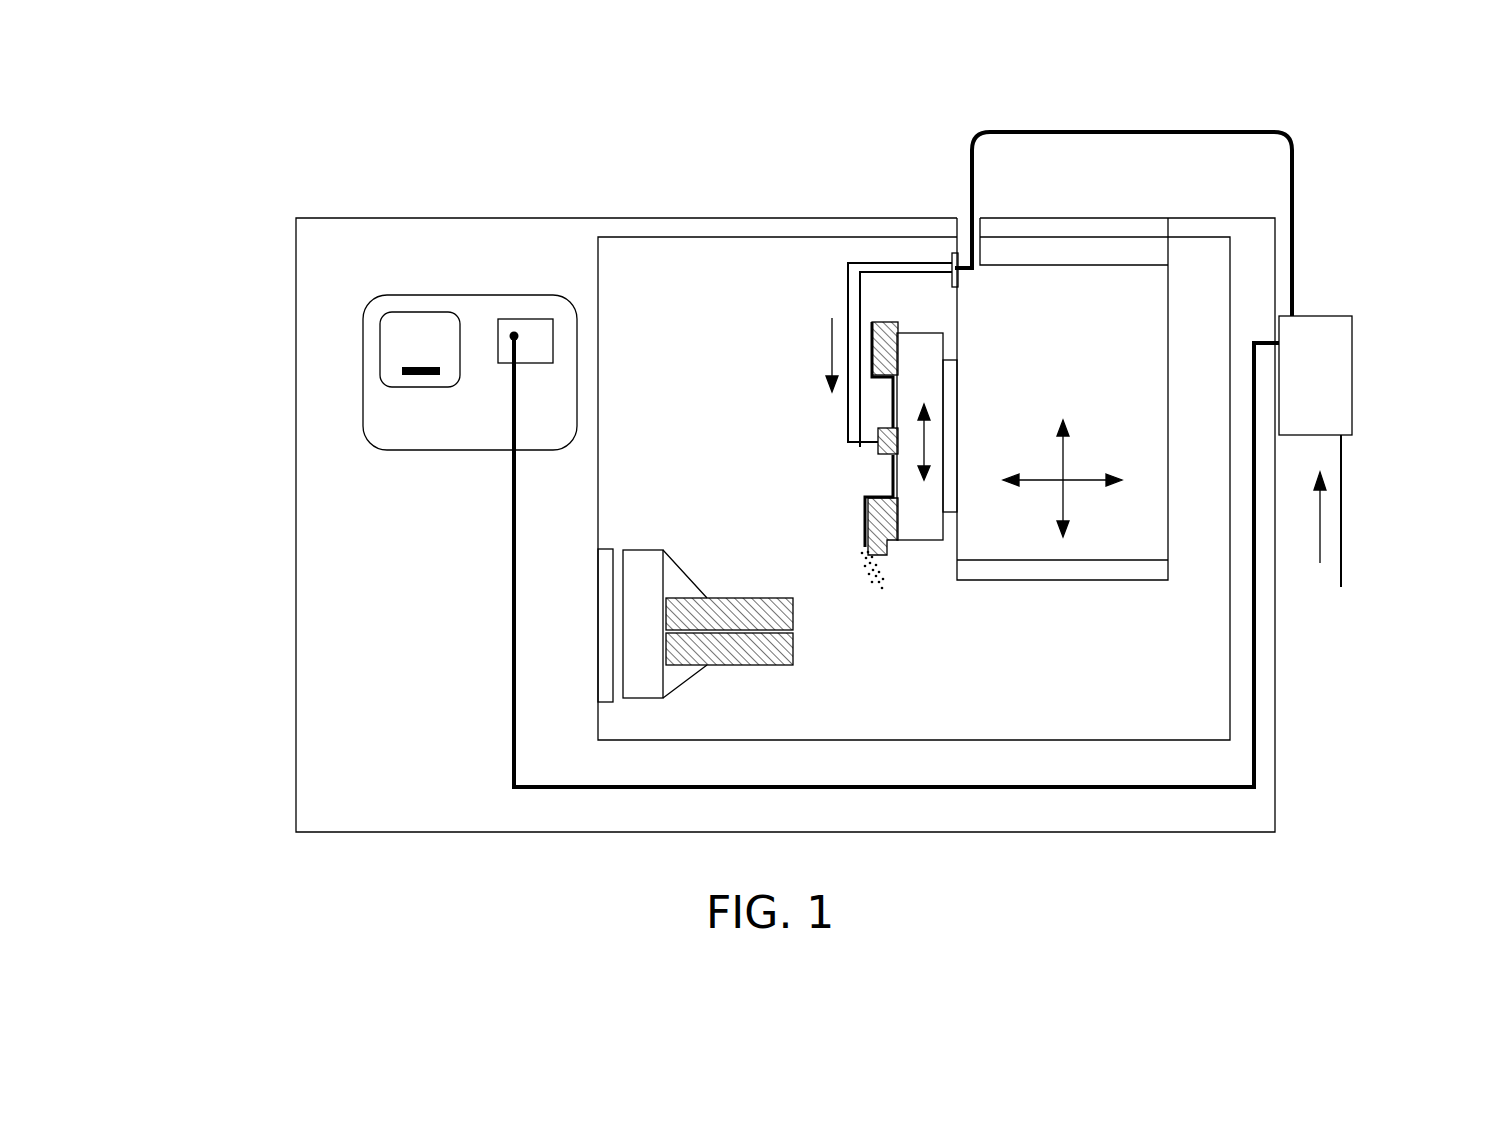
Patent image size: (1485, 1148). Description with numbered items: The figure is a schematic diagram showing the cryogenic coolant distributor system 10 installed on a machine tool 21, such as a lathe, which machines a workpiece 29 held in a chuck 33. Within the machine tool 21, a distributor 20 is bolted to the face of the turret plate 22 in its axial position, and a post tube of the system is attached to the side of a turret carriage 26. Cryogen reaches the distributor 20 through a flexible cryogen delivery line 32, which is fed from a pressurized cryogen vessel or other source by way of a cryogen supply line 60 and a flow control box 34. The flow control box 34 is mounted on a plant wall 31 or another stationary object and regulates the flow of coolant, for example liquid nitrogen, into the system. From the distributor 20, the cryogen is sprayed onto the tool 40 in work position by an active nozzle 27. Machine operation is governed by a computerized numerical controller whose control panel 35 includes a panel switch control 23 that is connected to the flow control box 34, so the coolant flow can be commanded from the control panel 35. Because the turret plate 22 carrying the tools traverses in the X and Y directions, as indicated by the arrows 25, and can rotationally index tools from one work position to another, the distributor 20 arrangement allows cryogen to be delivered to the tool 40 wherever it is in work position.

The cryogenic coolant distributor system 10 is at (862, 178).
The distributor 20 is at (848, 423).
The machine tool 21 is at (355, 748).
The turret plate 22 is at (925, 560).
The panel switch control 23 is at (535, 330).
The arrows 25 is at (1062, 535).
The turret carriage 26 is at (1168, 542).
The active nozzle 27 is at (865, 532).
The workpiece 29 is at (722, 660).
The plant wall 31 is at (1275, 790).
The flexible cryogen delivery line 32 is at (1137, 132).
The chuck 33 is at (640, 550).
The flow control box 34 is at (1352, 355).
The control panel 35 is at (397, 423).
The tool 40 is at (880, 553).
The cryogen supply line 60 is at (1341, 505).